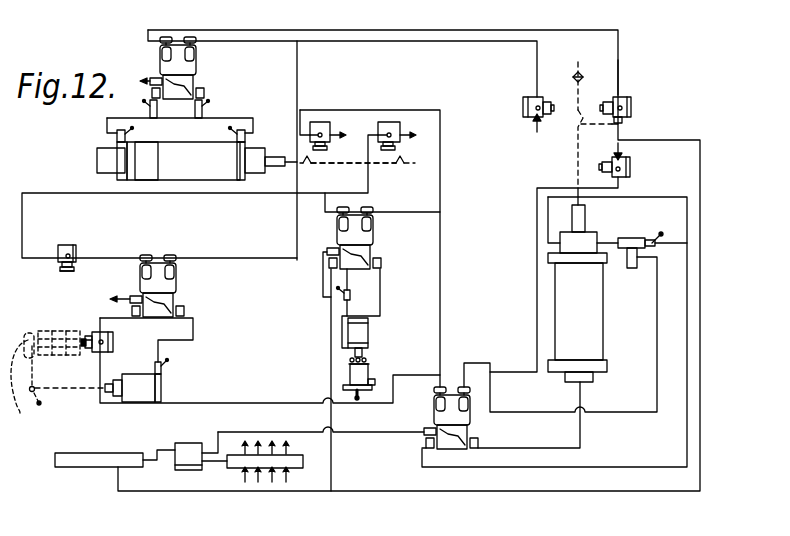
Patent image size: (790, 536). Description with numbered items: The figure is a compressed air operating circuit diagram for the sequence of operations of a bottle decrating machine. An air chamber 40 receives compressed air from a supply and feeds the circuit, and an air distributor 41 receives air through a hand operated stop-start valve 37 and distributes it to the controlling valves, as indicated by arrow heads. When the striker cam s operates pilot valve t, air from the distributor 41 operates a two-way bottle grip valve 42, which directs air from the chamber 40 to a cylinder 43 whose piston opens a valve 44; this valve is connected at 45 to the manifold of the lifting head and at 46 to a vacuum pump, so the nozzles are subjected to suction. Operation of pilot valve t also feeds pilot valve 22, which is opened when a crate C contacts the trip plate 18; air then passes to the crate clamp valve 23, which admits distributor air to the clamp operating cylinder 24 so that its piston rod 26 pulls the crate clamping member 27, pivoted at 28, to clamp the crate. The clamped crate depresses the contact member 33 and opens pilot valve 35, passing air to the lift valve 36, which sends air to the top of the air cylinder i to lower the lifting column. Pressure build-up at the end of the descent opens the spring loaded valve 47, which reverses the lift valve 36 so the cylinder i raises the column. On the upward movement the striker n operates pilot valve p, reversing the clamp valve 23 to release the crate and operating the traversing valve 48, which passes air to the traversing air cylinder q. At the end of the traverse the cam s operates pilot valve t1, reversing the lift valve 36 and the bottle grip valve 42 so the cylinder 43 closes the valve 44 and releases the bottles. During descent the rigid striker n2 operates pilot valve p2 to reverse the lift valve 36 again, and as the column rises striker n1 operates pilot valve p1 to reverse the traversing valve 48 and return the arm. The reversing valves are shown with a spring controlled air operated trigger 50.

The traversing valve 48 is at (180, 63).
The spring controlled air operated trigger 50 is at (195, 88).
The traversing air cylinder q is at (190, 163).
The pilot valve 22 is at (77, 245).
The trip plate 18 is at (62, 271).
The crate clamp valve 23 is at (158, 280).
The contact member 33 is at (92, 331).
The pilot valve 35 is at (98, 347).
The crate C is at (47, 332).
The crate clamping member 27 is at (16, 390).
The pivot 28 is at (39, 406).
The piston rod 26 is at (73, 388).
The crate clamp operating cylinder and piston 24 is at (145, 392).
The air chamber 40 is at (90, 462).
The hand operated stop-start valve 37 is at (190, 448).
The air distributor 41 is at (300, 468).
The two-way bottle grip valve 42 is at (357, 233).
The cylinder 43 is at (353, 333).
The valve 44 is at (348, 376).
The connection 45 is at (377, 381).
The connection 46 is at (357, 398).
The lift valve 36 is at (448, 413).
The pilot valve t1 is at (320, 128).
The pilot valve t is at (390, 128).
The striker cam s is at (352, 163).
The pilot valve p is at (523, 103).
The pilot valve p1 is at (630, 98).
The pilot valve p2 is at (630, 167).
The striker n is at (572, 72).
The striker n1 is at (635, 69).
The rigid striker n2 is at (620, 126).
The air cylinder i is at (567, 323).
The spring loaded valve 47 is at (630, 268).